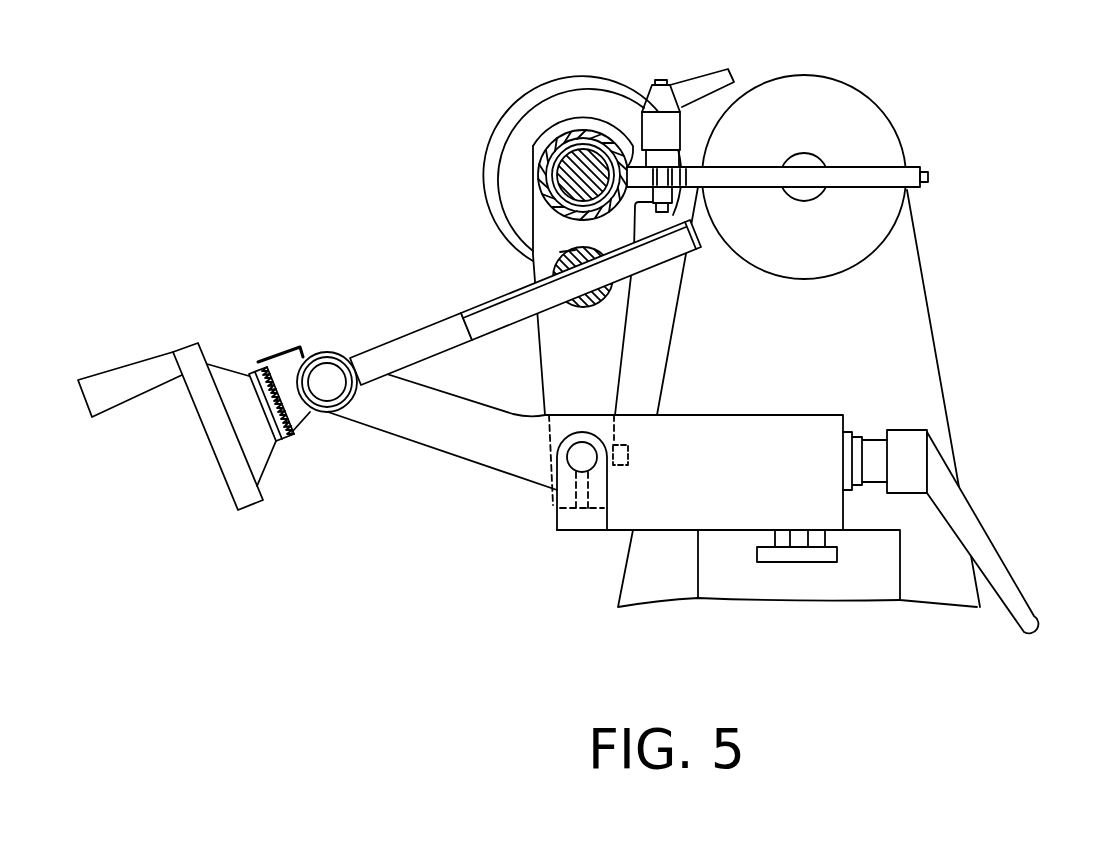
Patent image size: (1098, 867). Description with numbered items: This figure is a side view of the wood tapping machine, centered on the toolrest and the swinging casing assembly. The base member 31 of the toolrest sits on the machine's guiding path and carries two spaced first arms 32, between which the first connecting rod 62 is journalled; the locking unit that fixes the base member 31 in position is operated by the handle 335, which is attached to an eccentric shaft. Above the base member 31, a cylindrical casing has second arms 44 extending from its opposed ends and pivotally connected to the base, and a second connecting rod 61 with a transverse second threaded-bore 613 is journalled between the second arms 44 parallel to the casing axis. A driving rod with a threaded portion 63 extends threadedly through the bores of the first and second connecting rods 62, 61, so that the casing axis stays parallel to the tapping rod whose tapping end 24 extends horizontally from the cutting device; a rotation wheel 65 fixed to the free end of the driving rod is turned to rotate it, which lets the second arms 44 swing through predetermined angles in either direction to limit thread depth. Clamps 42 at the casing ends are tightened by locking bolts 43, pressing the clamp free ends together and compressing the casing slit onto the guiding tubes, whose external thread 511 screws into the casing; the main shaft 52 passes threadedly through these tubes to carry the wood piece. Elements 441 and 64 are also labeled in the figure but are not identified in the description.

The tapping end 24 is at (868, 118).
The base member 31 is at (807, 440).
The first arms 32 is at (443, 443).
The handle 335 is at (962, 512).
The clamps 42 is at (652, 163).
The locking bolts 43 is at (640, 127).
The second arms 44 is at (535, 210).
The pivot bracket 441 is at (578, 459).
The external thread 511 is at (567, 137).
The main shaft 52 is at (563, 165).
The second connecting rod 61 is at (552, 268).
The second threaded-bore 613 is at (578, 250).
The first connecting rod 62 is at (328, 392).
The threaded portion 63 is at (497, 322).
The knurled knob 64 is at (287, 435).
The rotation wheel 65 is at (247, 498).